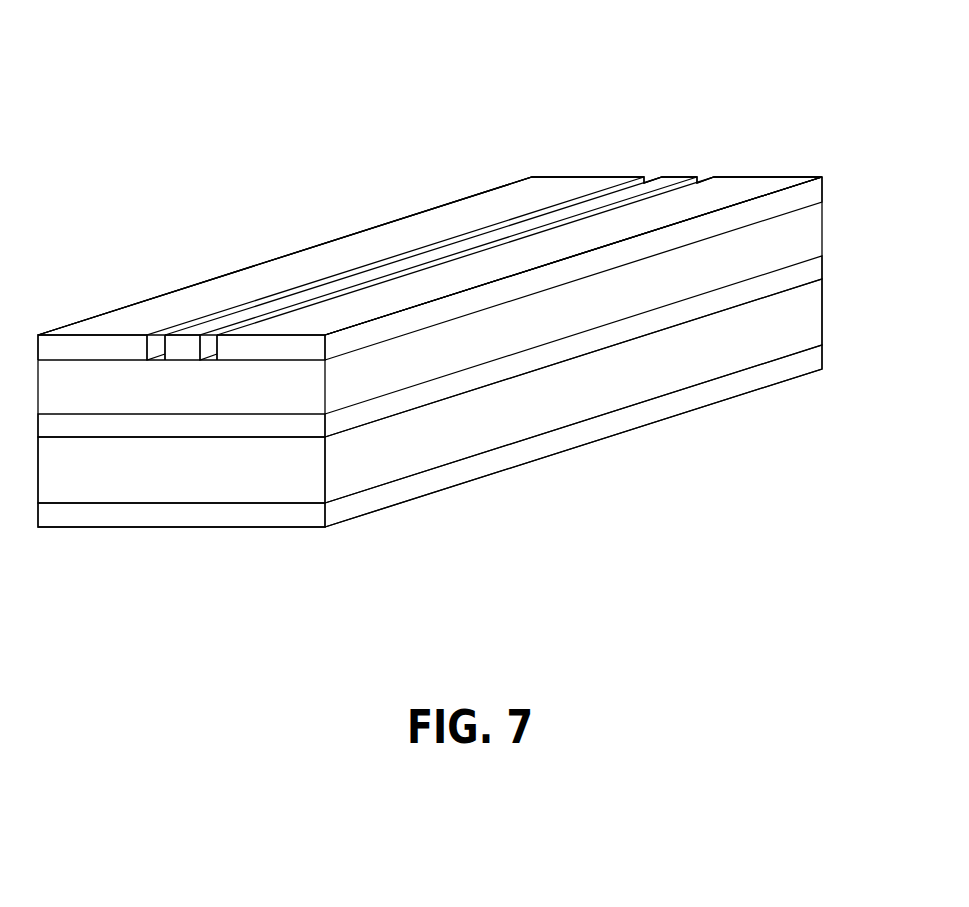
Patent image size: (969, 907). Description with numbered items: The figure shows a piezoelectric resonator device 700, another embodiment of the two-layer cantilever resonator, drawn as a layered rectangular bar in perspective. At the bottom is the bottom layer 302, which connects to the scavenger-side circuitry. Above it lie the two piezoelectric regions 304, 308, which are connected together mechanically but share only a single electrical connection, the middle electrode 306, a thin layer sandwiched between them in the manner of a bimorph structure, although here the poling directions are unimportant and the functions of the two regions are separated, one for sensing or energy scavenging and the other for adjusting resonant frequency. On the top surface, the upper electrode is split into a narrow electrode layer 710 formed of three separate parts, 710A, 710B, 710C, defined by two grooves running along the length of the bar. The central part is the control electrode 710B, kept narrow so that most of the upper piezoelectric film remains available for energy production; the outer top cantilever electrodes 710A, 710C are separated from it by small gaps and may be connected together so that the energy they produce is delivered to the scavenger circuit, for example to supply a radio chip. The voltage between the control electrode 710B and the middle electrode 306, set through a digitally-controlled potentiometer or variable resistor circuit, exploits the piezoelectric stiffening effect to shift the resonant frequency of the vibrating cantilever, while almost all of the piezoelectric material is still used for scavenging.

The piezoelectric resonator device 700 is at (554, 87).
The narrow electrode layer 710 is at (589, 163).
The top cantilever electrode 710A is at (200, 300).
The control electrode 710B is at (340, 283).
The top cantilever electrode 710C is at (453, 275).
The bottom layer 302 is at (383, 497).
The first piezoelectric region 304 is at (465, 420).
The middle electrode 306 is at (572, 347).
The second piezoelectric region 308 is at (640, 245).